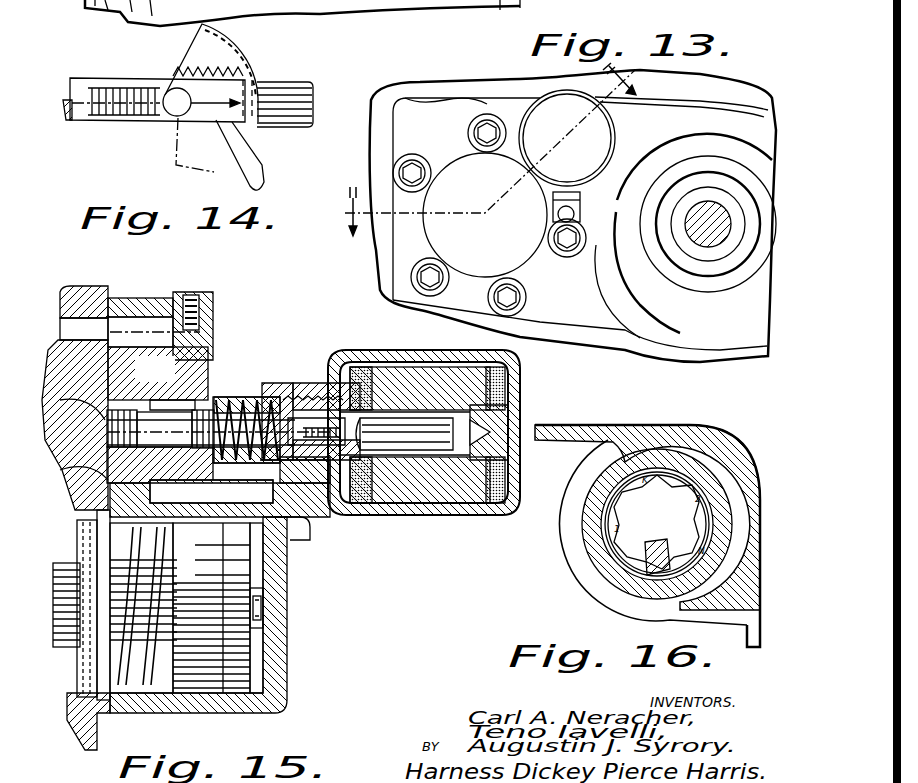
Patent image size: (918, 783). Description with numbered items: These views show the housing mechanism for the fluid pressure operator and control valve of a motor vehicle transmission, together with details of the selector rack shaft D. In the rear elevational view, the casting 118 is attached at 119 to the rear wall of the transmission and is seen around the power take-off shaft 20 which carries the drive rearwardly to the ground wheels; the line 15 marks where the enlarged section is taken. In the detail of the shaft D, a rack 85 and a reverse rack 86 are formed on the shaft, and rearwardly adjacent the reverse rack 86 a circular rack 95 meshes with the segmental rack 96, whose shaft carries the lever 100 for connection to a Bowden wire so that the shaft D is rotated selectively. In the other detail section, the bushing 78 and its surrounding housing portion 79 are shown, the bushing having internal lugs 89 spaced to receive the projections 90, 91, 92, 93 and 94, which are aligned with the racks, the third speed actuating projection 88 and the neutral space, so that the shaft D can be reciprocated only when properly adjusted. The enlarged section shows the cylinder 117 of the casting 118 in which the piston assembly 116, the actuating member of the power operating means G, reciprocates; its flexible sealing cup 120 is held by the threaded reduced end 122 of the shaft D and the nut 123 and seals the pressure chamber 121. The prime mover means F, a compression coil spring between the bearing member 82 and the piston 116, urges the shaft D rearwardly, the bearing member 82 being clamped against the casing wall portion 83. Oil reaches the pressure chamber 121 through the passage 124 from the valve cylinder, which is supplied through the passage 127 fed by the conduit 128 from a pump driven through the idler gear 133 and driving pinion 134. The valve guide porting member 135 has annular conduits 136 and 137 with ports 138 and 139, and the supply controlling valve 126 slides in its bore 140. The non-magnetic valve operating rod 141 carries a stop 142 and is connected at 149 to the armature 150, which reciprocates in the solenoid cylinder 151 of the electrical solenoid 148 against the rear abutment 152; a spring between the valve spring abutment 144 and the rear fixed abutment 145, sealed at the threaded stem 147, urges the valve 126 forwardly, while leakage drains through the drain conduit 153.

In FIG. 13, the section line 15— 15 is at (501, 158).
In FIG. 13, the power take-off shaft 20 is at (712, 208).
In FIG. 16, the bushing 78 is at (598, 492).
In FIG. 16, the housing 79 is at (700, 440).
In FIG. 15, the bearing member 82 is at (78, 675).
In FIG. 15, the housing flange 83 is at (75, 480).
In FIG. 14, the rack 85 is at (112, 88).
In FIG. 14, the reverse rack 86 is at (183, 70).
In FIG. 16, the third speed actuating projection 88 is at (642, 557).
In FIG. 16, the internal lugs 89 is at (682, 462).
In FIG. 16, the projection 90 is at (606, 524).
In FIG. 16, the projection 91 is at (663, 470).
In FIG. 16, the projection 92 is at (650, 559).
In FIG. 16, the projection 93 is at (688, 488).
In FIG. 16, the projection 94 is at (656, 522).
In FIG. 14, the circular rack 95 is at (285, 88).
In FIG. 15, the circular rack 95 is at (52, 616).
In FIG. 14, the segmental rack 96 is at (243, 60).
In FIG. 14, the lever 100 is at (240, 160).
In FIG. 15, the fluid pressure operating piston assembly 116 is at (212, 565).
In FIG. 15, the cylinder 117 is at (272, 703).
In FIG. 15, the casting 118 is at (302, 380).
In FIG. 13, the attachment 119 is at (412, 170).
In FIG. 15, the flexible sealing cup 120 is at (236, 648).
In FIG. 15, the pressure chamber 121 is at (256, 665).
In FIG. 15, the threaded reduced end 122 is at (262, 610).
In FIG. 15, the nut 123 is at (256, 594).
In FIG. 15, the passage 124 is at (300, 518).
In FIG. 15, the fluid pressure supply controlling valve 126 is at (105, 448).
In FIG. 15, the passage 127 is at (190, 322).
In FIG. 15, the conduit 128 is at (82, 322).
In FIG. 15, the idler gear 133 is at (165, 384).
In FIG. 15, the driving pinion 134 is at (135, 440).
In FIG. 15, the valve guide porting member 135 is at (140, 424).
In FIG. 15, the annular conduit 136 is at (175, 392).
In FIG. 15, the annular conduit 137 is at (110, 420).
In FIG. 15, the port 138 is at (190, 449).
In FIG. 15, the port 139 is at (130, 545).
In FIG. 15, the cylindrical bore 140 is at (180, 460).
In FIG. 15, the valve operating rod 141 is at (263, 395).
In FIG. 15, the stop 142 is at (110, 437).
In FIG. 15, the valve spring abutment 144 is at (216, 404).
In FIG. 15, the rear fixed abutment 145 is at (235, 465).
In FIG. 15, the threaded stem 147 is at (322, 375).
In FIG. 13, the electrical solenoid 148 is at (535, 118).
In FIG. 15, the electrical solenoid 148 is at (448, 448).
In FIG. 15, the connection 149 is at (360, 440).
In FIG. 15, the armature 150 is at (392, 470).
In FIG. 15, the solenoid cylinder 151 is at (437, 385).
In FIG. 15, the rear abutment 152 is at (522, 418).
In FIG. 13, the drain conduit 153 is at (582, 204).
In FIG. 14, the actuating shaft D is at (98, 122).
In FIG. 15, the actuating shaft D is at (50, 575).
In FIG. 16, the actuating shaft D is at (678, 490).
In FIG. 13, the power operating means G is at (458, 168).
In FIG. 15, the power operating means G is at (268, 540).
In FIG. 15, the prime mover means F is at (145, 685).